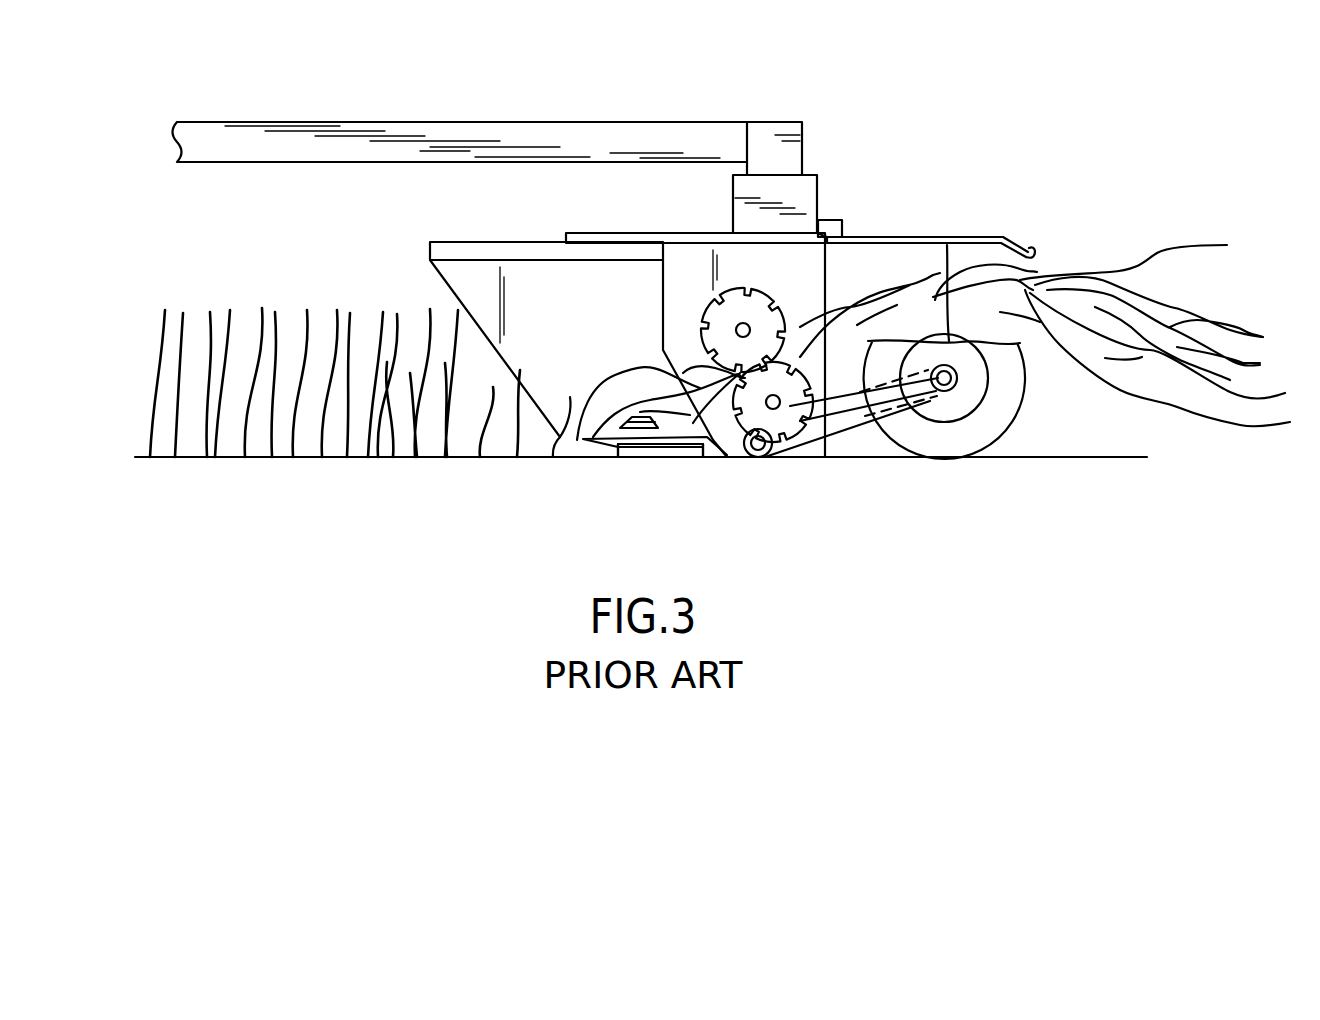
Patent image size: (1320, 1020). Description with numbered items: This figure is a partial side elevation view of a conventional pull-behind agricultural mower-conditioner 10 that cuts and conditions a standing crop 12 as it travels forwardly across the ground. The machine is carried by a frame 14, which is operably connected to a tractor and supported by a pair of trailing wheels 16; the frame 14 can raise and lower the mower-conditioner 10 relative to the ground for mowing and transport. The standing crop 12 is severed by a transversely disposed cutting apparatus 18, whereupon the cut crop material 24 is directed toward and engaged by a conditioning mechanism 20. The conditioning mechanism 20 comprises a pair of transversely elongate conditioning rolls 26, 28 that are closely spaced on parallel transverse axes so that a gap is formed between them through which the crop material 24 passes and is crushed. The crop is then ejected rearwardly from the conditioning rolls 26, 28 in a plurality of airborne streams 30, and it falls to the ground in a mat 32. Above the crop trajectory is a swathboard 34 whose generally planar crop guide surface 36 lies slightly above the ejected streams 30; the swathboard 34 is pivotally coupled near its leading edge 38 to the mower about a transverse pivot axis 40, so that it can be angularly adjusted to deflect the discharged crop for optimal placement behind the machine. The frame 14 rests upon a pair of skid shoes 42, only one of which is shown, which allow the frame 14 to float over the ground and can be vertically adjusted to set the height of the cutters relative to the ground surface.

The mower-conditioner 10 is at (828, 90).
The standing crop 12 is at (307, 318).
The frame 14 is at (592, 230).
The trailing wheels 16 is at (944, 445).
The cutting apparatus 18 is at (612, 478).
The conditioning mechanism 20 is at (768, 492).
The cut crop material 24 is at (630, 358).
The conditioning roll 26 is at (720, 325).
The conditioning roll 28 is at (755, 412).
The airborne streams 30 is at (1024, 280).
The mat 32 is at (1162, 392).
The swathboard 34 is at (938, 237).
The crop guide surface 36 is at (1003, 246).
The leading edge 38 is at (843, 232).
The pivot axis 40 is at (835, 235).
The skid shoes 42 is at (655, 457).